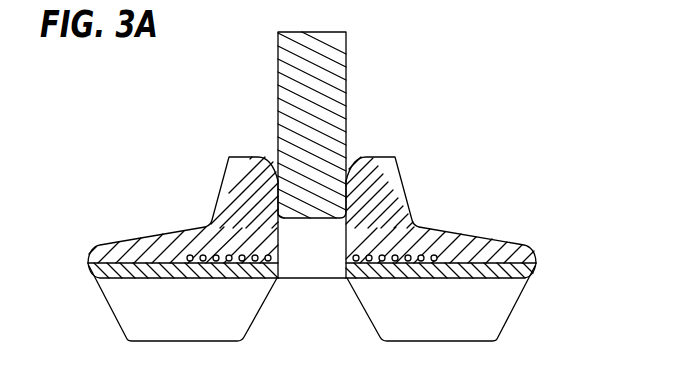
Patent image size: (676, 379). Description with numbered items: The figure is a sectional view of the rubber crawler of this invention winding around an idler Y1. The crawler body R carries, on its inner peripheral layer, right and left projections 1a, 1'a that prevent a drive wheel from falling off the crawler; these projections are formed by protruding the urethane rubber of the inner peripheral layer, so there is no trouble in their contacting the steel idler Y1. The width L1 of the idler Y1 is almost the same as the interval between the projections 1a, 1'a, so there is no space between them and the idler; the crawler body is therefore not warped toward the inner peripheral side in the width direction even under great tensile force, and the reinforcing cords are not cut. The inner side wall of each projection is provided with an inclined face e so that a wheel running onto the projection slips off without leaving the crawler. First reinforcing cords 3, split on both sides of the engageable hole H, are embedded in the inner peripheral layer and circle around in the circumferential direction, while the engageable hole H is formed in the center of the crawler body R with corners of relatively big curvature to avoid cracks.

The idler Y1 is at (343, 88).
The width of the idler L1 is at (346, 32).
The projection 1a is at (246, 163).
The projection 1'a is at (382, 169).
The inclined face e is at (273, 178).
The first reinforcing cords 3 is at (203, 255).
The rubber crawler body R is at (484, 236).
The engageable hole H is at (317, 266).